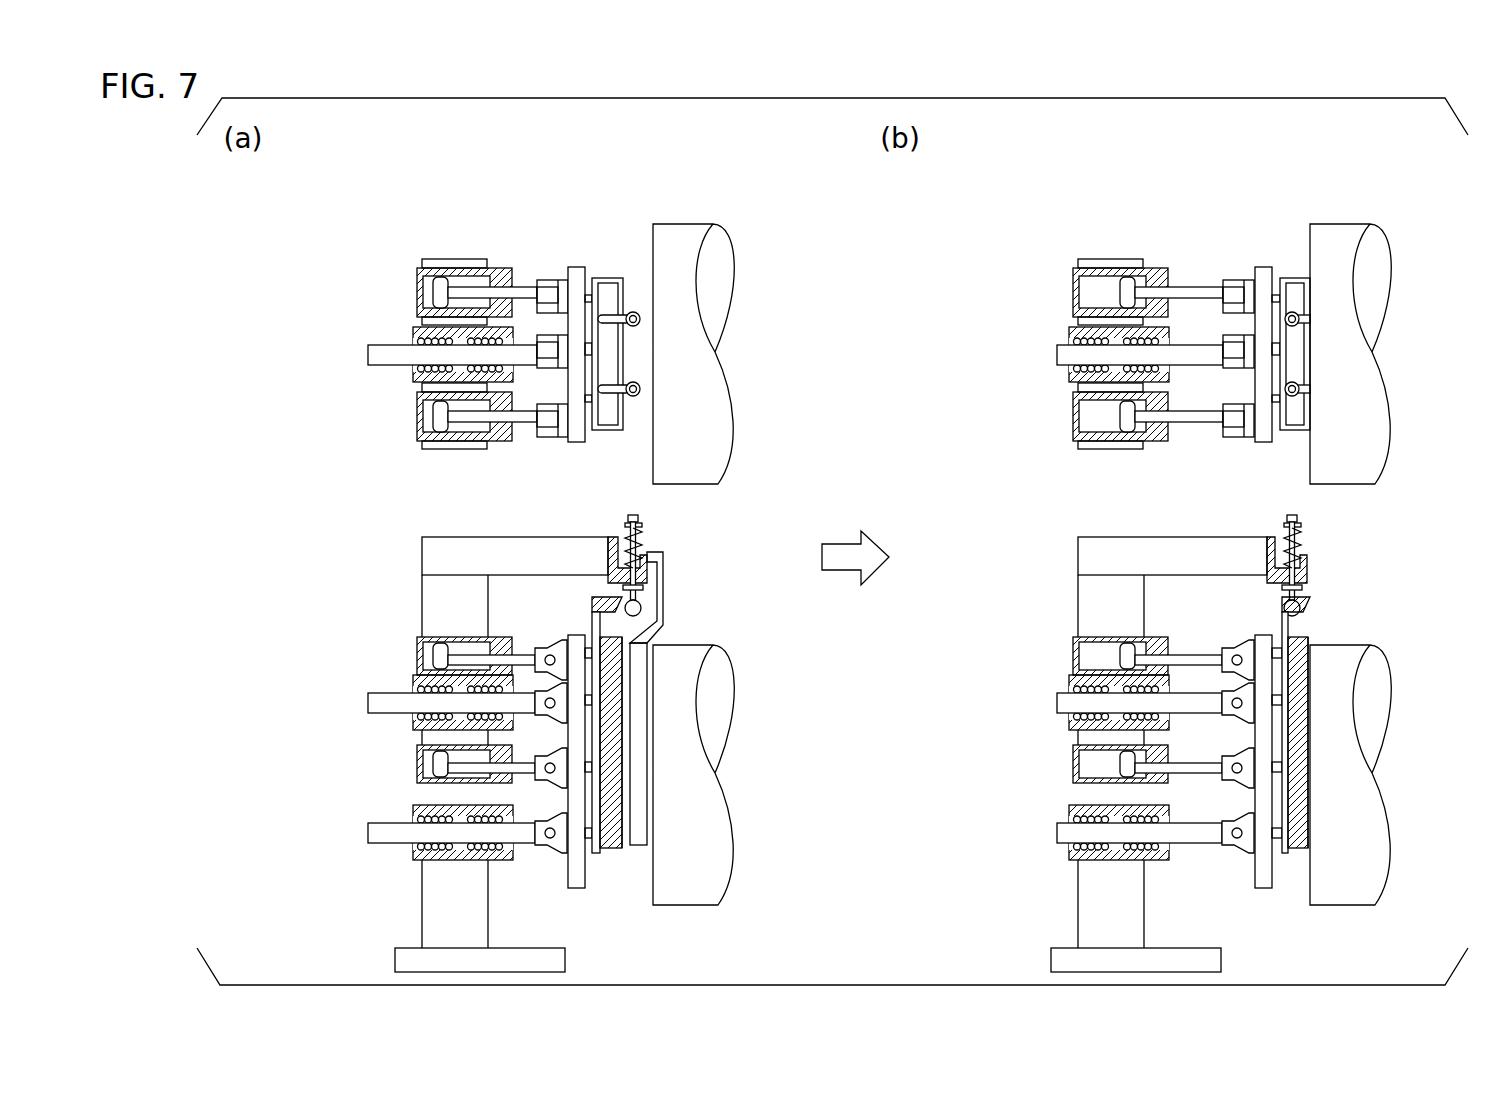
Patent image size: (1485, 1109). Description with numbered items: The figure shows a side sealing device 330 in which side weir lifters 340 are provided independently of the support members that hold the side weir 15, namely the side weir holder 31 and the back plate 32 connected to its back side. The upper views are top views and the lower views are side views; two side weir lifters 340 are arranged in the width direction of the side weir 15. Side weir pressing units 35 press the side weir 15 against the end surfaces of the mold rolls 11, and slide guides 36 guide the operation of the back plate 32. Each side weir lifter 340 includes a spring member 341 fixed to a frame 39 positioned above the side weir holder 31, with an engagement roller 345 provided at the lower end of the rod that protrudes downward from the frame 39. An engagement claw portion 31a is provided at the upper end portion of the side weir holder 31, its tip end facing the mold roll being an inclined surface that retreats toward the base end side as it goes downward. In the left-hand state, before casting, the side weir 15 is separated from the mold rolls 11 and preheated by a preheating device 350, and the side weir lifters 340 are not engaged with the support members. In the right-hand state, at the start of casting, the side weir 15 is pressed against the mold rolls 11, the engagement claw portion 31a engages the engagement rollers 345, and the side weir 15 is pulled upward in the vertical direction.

The mold roll 11 is at (698, 420).
The side weir 15 is at (612, 755).
The side weir holder 31 is at (610, 432).
The engagement claw portion 31a is at (593, 603).
The back plate 32 is at (575, 266).
The side weir pressing unit 35 is at (417, 293).
The slide guide 36 is at (350, 356).
The frame 39 is at (608, 575).
The side sealing device 330 is at (352, 255).
The side weir lifter 340 is at (620, 255).
The spring member 341 is at (620, 536).
The engagement roller 345 is at (645, 607).
The preheating device 350 is at (641, 675).